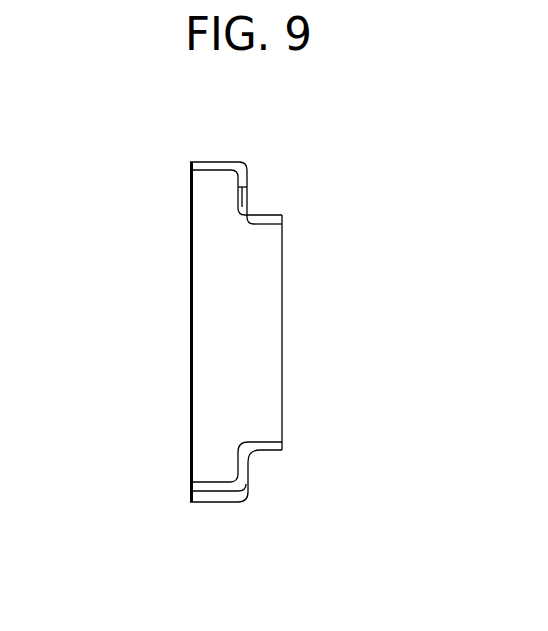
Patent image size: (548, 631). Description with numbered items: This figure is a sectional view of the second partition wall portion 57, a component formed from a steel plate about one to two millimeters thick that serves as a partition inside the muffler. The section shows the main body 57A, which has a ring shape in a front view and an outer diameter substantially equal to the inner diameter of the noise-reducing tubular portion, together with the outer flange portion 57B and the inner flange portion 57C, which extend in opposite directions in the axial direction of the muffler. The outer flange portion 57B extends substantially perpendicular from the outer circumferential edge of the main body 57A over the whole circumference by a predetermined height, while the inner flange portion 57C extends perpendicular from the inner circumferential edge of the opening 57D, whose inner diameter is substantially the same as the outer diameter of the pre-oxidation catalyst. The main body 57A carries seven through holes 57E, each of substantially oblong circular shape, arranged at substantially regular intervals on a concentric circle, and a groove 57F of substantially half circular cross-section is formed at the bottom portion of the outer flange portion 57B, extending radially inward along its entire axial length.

The second partition wall portion 57 is at (284, 129).
The main body 57A is at (246, 180).
The outer flange portion 57B is at (210, 160).
The inner flange portion 57C is at (267, 213).
The opening 57D is at (242, 225).
The through holes 57E is at (236, 195).
The groove 57F is at (215, 494).